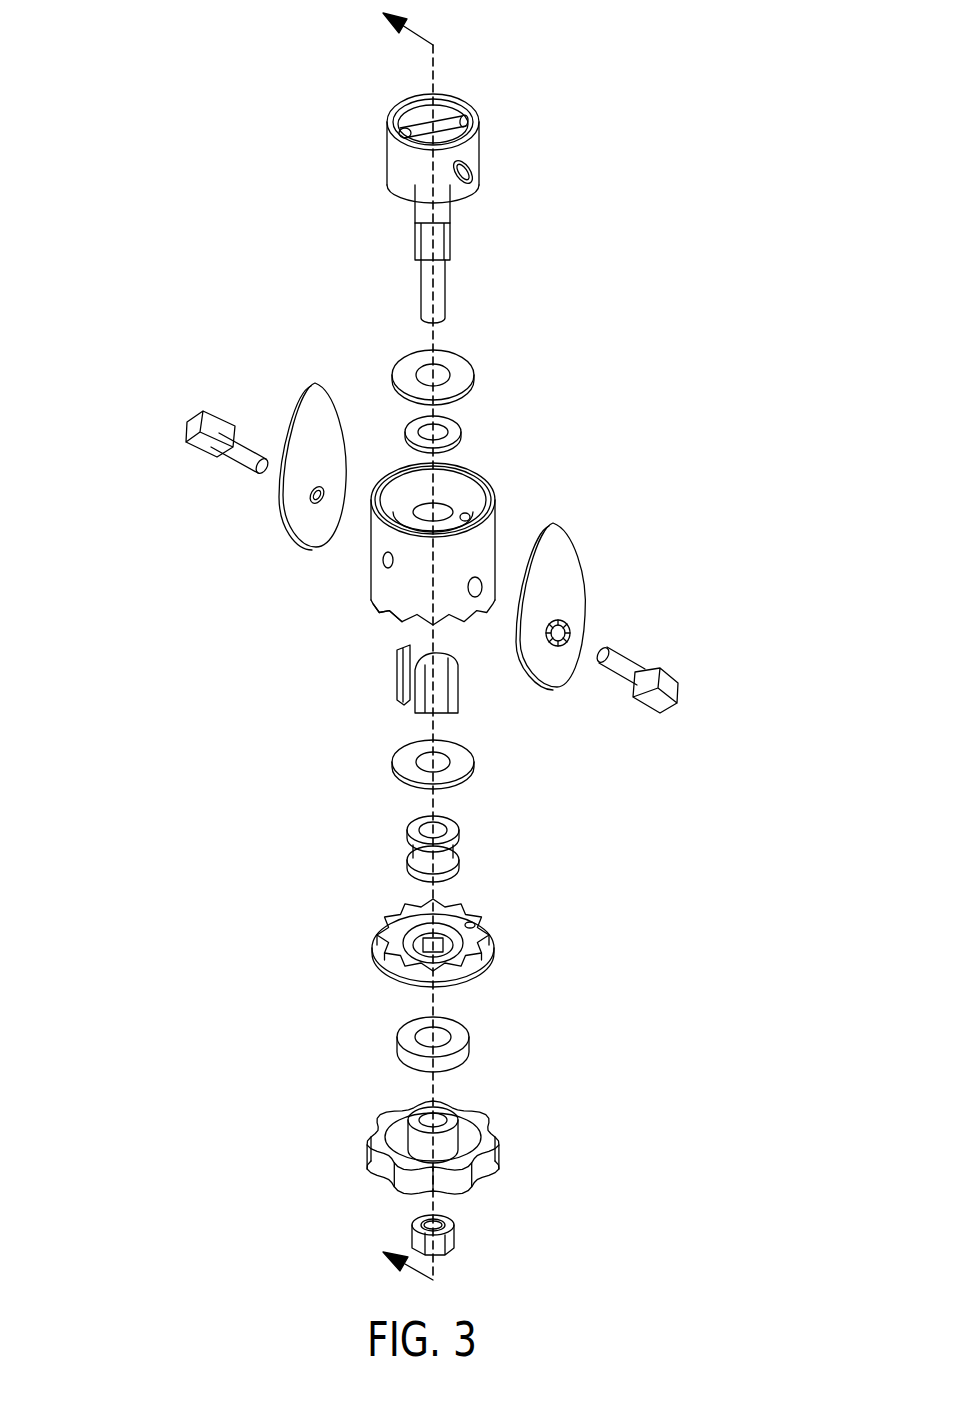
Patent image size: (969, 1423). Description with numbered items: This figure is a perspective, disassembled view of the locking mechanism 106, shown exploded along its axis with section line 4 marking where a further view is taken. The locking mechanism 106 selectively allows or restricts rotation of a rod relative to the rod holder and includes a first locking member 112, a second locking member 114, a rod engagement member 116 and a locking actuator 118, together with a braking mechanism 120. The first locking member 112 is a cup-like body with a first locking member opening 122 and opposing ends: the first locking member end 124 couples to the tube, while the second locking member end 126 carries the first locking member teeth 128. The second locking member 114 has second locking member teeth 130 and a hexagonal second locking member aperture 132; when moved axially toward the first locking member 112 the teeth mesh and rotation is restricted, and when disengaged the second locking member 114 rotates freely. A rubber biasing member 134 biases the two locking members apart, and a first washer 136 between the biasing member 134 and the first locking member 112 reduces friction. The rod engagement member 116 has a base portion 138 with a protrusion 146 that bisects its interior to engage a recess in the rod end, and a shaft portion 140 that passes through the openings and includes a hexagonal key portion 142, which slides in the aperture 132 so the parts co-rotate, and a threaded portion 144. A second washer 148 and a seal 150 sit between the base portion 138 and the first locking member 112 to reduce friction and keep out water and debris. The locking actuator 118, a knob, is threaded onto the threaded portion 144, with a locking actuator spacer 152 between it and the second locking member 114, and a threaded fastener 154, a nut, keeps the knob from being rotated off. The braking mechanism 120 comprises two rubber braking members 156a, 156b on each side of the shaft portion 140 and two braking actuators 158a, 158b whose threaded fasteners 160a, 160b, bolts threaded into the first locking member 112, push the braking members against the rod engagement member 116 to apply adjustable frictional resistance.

The section line 4- 4 is at (395, 640).
The locking mechanism 106 is at (200, 208).
The first locking member 112 is at (442, 533).
The second locking member 114 is at (380, 942).
The rod engagement member 116 is at (470, 160).
The locking actuator 118 is at (478, 1170).
The braking mechanism 120 is at (150, 418).
The first locking member opening 122 is at (430, 528).
The first locking member end 124 is at (462, 471).
The second locking member end 126 is at (455, 617).
The first locking member teeth 128 is at (388, 617).
The second locking member teeth 130 is at (413, 922).
The second locking member aperture 132 is at (440, 945).
The biasing member 134 is at (455, 852).
The first washer 136 is at (460, 765).
The base portion 138 is at (440, 122).
The shaft portion 140 is at (440, 196).
The key portion 142 is at (420, 238).
The threaded portion 144 is at (425, 292).
The protrusion 146 is at (430, 130).
The second washer 148 is at (405, 365).
The seal 150 is at (450, 428).
The locking actuator spacer 152 is at (452, 1057).
The threaded fastener 154 is at (445, 1250).
The braking member 156a is at (455, 683).
The braking member 156b is at (400, 686).
The braking actuator 158a is at (562, 592).
The braking actuator 158b is at (298, 410).
The threaded fastener 160a is at (660, 687).
The threaded fastener 160b is at (247, 462).